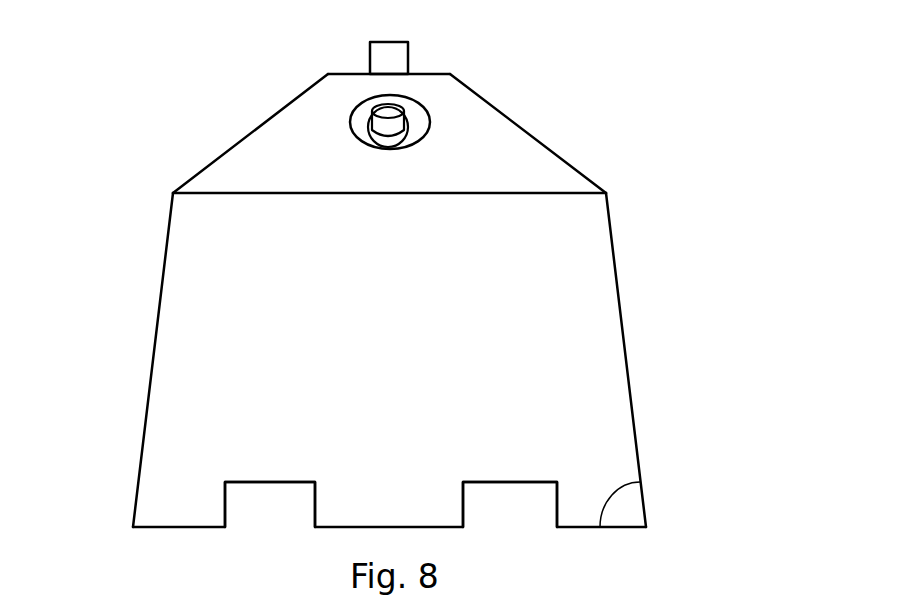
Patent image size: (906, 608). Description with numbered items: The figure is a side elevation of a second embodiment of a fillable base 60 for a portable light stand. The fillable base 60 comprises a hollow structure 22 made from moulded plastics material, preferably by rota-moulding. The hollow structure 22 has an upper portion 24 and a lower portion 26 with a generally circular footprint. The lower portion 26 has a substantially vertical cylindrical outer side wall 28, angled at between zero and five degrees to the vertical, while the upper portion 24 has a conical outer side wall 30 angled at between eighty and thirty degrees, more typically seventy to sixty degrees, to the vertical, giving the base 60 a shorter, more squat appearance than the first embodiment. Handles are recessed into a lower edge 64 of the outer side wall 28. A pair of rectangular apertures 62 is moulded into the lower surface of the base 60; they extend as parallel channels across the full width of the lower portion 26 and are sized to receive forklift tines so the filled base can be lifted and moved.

The hollow structure 22 is at (168, 235).
The upper portion 24 is at (238, 137).
The lower portion 26 is at (158, 345).
The substantially vertical cylindrical outer side wall 28 is at (583, 262).
The conical outer side wall 30 is at (530, 157).
The fillable base 60 is at (562, 93).
The rectangular apertures 62 is at (263, 482).
The lower edge 64 is at (640, 482).